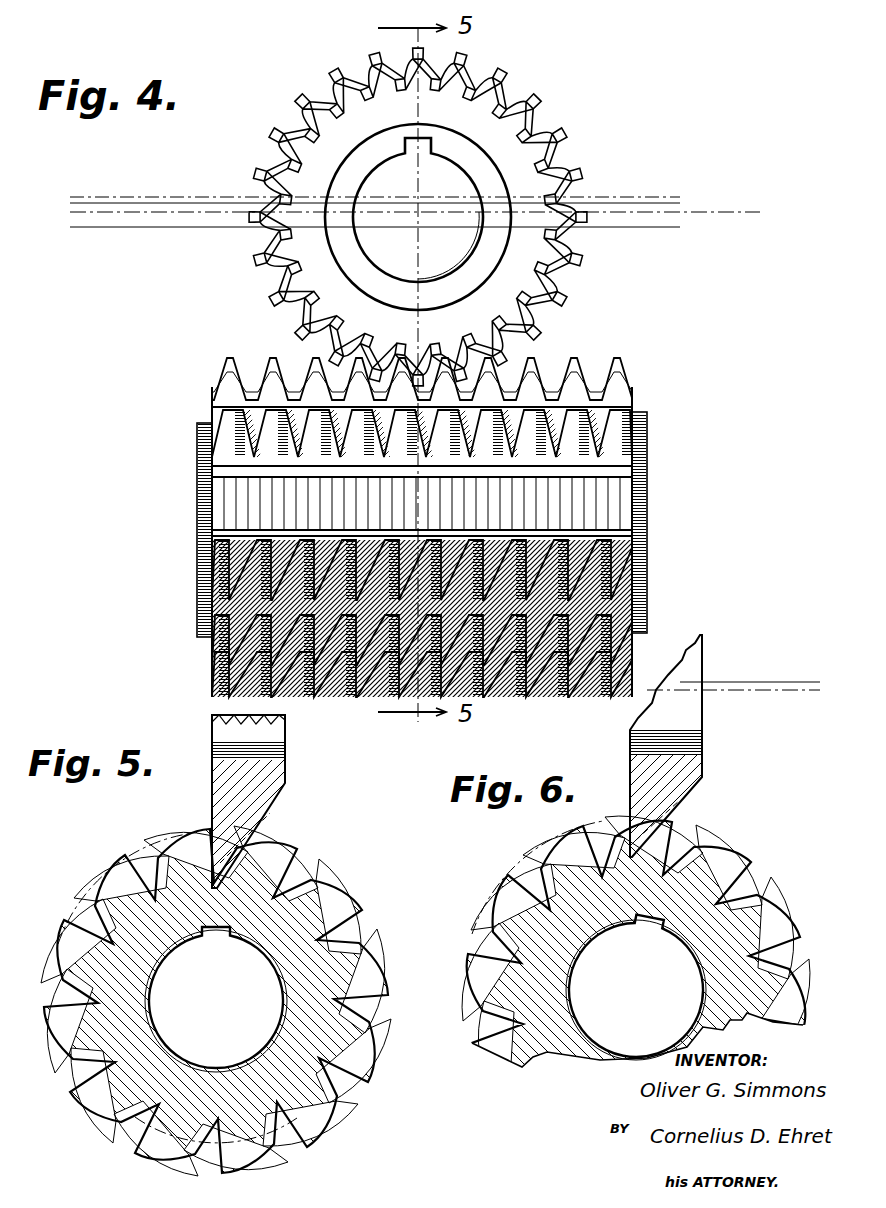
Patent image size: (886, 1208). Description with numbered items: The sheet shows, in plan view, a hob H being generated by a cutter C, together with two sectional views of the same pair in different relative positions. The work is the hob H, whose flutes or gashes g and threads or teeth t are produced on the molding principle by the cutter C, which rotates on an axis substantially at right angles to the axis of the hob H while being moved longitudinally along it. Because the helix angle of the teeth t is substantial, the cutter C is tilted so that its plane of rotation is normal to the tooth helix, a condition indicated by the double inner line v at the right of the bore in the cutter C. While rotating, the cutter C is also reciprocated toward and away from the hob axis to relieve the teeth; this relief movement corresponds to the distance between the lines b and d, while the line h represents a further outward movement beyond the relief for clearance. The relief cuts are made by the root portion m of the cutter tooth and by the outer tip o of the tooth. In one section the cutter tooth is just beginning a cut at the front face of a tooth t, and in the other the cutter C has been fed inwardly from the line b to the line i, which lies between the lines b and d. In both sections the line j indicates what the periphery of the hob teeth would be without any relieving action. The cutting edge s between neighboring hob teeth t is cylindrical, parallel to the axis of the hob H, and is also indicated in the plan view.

In FIG. 4, the cutter C is at (535, 170).
In FIG. 5, the cutter C is at (257, 780).
In FIG. 6, the cutter C is at (690, 775).
In FIG. 4, the hob H is at (647, 463).
In FIG. 5, the hob H is at (373, 1070).
In FIG. 6, the hob H is at (713, 947).
In FIG. 4, the cutting edge / rack element e is at (307, 108).
In FIG. 5, the cutting edge / rack element e is at (202, 847).
In FIG. 6, the cutting edge / rack element e is at (623, 833).
In FIG. 4, the root portion m is at (283, 168).
In FIG. 4, the outer tip o is at (255, 172).
In FIG. 4, the line h is at (612, 195).
In FIG. 4, the line b is at (658, 196).
In FIG. 6, the line b is at (753, 682).
In FIG. 4, the line d is at (646, 231).
In FIG. 4, the cutting edge s is at (262, 360).
In FIG. 4, the threads or teeth t is at (228, 370).
In FIG. 5, the threads or teeth t is at (180, 860).
In FIG. 6, the threads or teeth t is at (617, 833).
In FIG. 4, the flutes or gashes g is at (213, 468).
In FIG. 5, the flutes or gashes g is at (150, 873).
In FIG. 6, the flutes or gashes g is at (667, 850).
In FIG. 5, the line j is at (95, 888).
In FIG. 6, the line j is at (540, 855).
In FIG. 6, the line i is at (770, 688).
In FIG. 4, the double inner line v is at (476, 233).